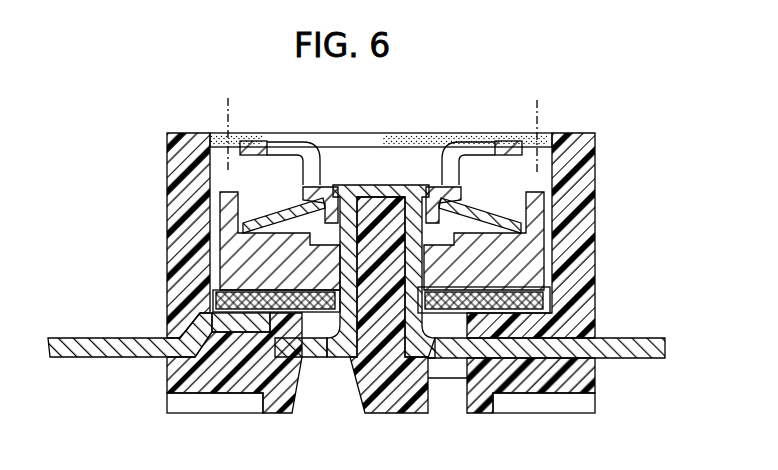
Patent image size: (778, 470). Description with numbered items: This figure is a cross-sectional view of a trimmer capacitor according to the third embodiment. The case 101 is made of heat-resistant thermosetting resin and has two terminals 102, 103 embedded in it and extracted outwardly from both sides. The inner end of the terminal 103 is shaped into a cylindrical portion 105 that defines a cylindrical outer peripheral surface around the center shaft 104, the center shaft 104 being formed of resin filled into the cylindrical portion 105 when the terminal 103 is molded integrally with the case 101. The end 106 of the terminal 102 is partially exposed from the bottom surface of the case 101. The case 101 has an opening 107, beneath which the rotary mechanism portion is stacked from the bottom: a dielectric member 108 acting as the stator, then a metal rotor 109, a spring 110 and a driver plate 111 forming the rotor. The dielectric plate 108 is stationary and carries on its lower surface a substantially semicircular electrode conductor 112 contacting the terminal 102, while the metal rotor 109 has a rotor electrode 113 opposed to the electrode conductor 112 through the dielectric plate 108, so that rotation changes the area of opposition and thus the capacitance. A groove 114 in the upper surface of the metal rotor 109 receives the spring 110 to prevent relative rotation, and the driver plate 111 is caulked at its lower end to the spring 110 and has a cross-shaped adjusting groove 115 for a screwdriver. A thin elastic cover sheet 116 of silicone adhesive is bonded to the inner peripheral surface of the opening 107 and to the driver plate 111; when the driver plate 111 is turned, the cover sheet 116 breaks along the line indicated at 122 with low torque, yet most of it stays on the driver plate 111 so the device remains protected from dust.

The case 101 is at (412, 273).
The terminal 102 is at (85, 328).
The terminal 103 is at (655, 333).
The center shaft 104 is at (378, 302).
The cylindrical portion 105 is at (355, 232).
The end of the terminal 106 is at (245, 325).
The opening 107 is at (543, 137).
The dielectric member 108 is at (540, 303).
The metal rotor 109 is at (540, 193).
The spring 110 is at (285, 217).
The driver plate 111 is at (372, 152).
The electrode conductor 112 is at (222, 297).
The rotor electrode 113 is at (243, 278).
The groove 114 is at (247, 213).
The adjusting groove 115 is at (288, 137).
The cover sheet 116 is at (447, 135).
The break line 122 is at (227, 103).